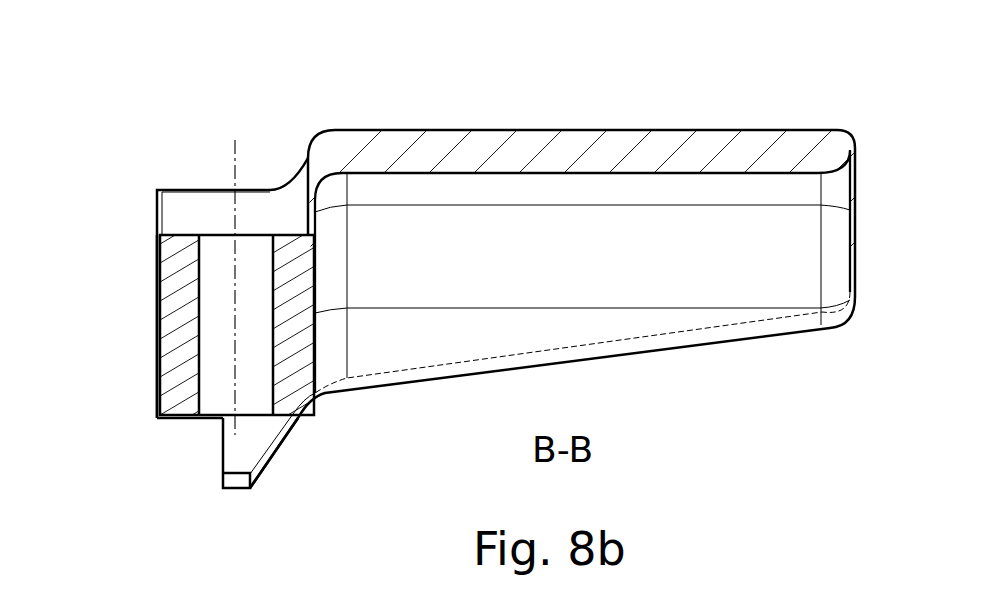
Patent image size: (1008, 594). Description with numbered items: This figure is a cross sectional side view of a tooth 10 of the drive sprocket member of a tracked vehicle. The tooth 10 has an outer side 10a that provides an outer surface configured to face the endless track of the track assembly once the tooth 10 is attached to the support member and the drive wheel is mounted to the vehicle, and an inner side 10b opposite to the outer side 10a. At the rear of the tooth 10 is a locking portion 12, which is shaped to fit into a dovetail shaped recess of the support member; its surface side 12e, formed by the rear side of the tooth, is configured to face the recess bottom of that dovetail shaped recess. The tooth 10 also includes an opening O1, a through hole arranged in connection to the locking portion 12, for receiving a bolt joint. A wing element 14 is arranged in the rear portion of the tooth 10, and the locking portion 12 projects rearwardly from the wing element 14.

The tooth 10 is at (582, 258).
The outer side 10a is at (490, 130).
The inner side 10b is at (598, 357).
The locking portion 12 is at (188, 316).
The surface side 12e is at (155, 327).
The wing element 14 is at (276, 463).
The opening O1 is at (223, 250).